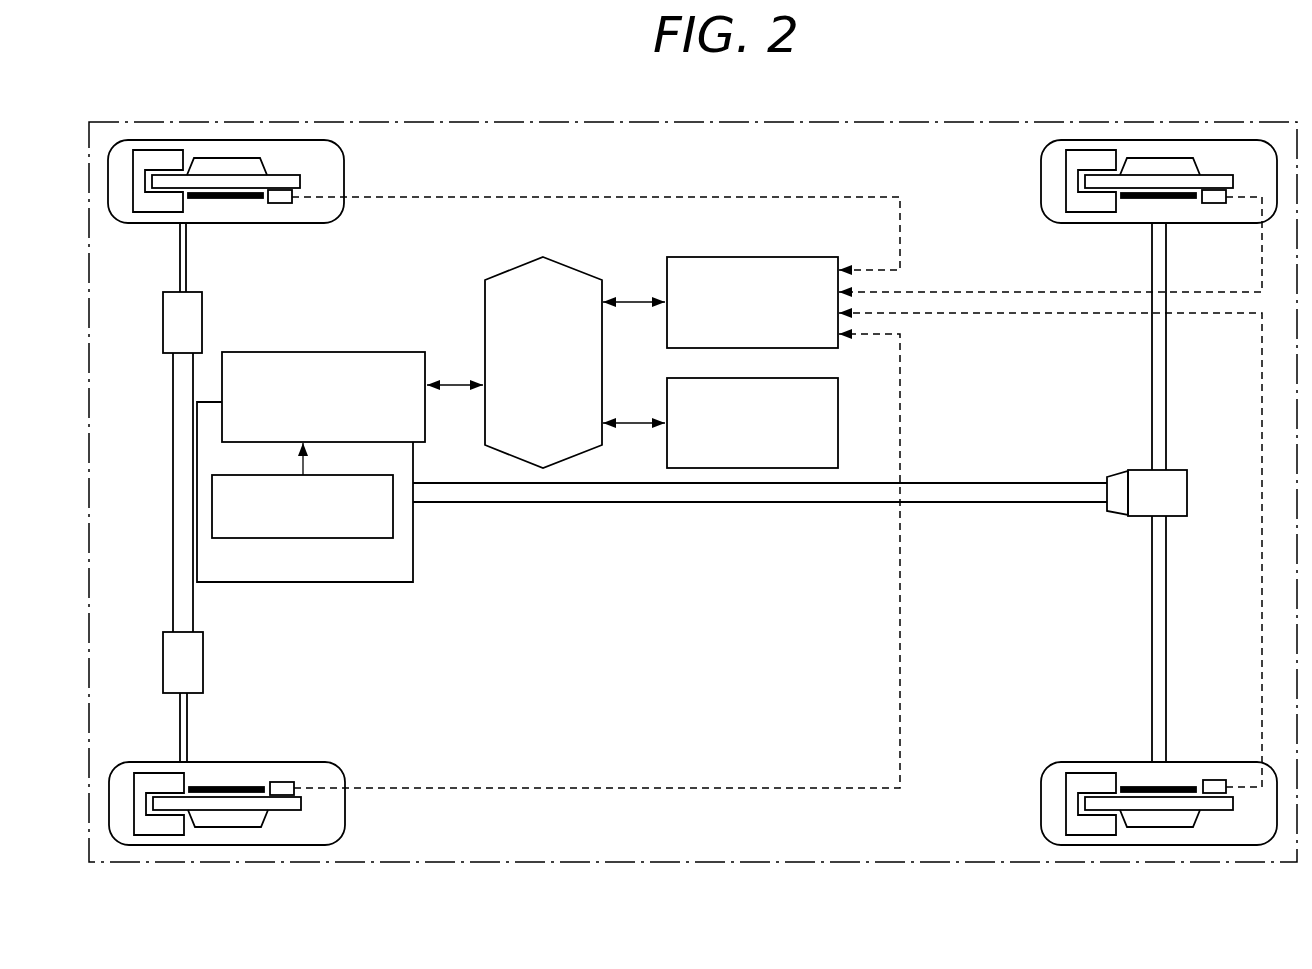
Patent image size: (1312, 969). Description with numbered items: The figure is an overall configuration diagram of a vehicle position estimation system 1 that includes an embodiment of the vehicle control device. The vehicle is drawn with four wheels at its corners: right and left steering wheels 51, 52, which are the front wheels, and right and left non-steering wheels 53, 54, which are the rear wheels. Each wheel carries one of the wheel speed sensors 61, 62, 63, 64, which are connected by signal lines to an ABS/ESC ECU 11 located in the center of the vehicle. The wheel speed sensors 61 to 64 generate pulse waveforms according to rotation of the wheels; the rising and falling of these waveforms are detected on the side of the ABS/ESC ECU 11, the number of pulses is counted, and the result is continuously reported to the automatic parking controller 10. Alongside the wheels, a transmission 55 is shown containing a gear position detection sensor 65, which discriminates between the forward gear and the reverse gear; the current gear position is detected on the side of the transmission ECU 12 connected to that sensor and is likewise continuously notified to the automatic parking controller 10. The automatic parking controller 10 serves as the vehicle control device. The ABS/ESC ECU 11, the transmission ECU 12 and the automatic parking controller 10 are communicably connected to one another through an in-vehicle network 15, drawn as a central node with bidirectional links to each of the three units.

The vehicle position estimation system 1 is at (1172, 92).
The automatic parking controller 10 is at (698, 378).
The ABS/ESC ECU 11 is at (697, 257).
The transmission ECU 12 is at (397, 352).
The in-vehicle network 15 is at (513, 265).
The steering wheel 51 is at (122, 830).
The steering wheel 52 is at (118, 154).
The non-steering wheel 53 is at (1053, 828).
The non-steering wheel 54 is at (1052, 154).
The transmission 55 is at (368, 582).
The wheel speed sensor 61 is at (283, 782).
The wheel speed sensor 62 is at (283, 204).
The wheel speed sensor 63 is at (1215, 780).
The wheel speed sensor 64 is at (1215, 204).
The gear position detection sensor 65 is at (394, 517).